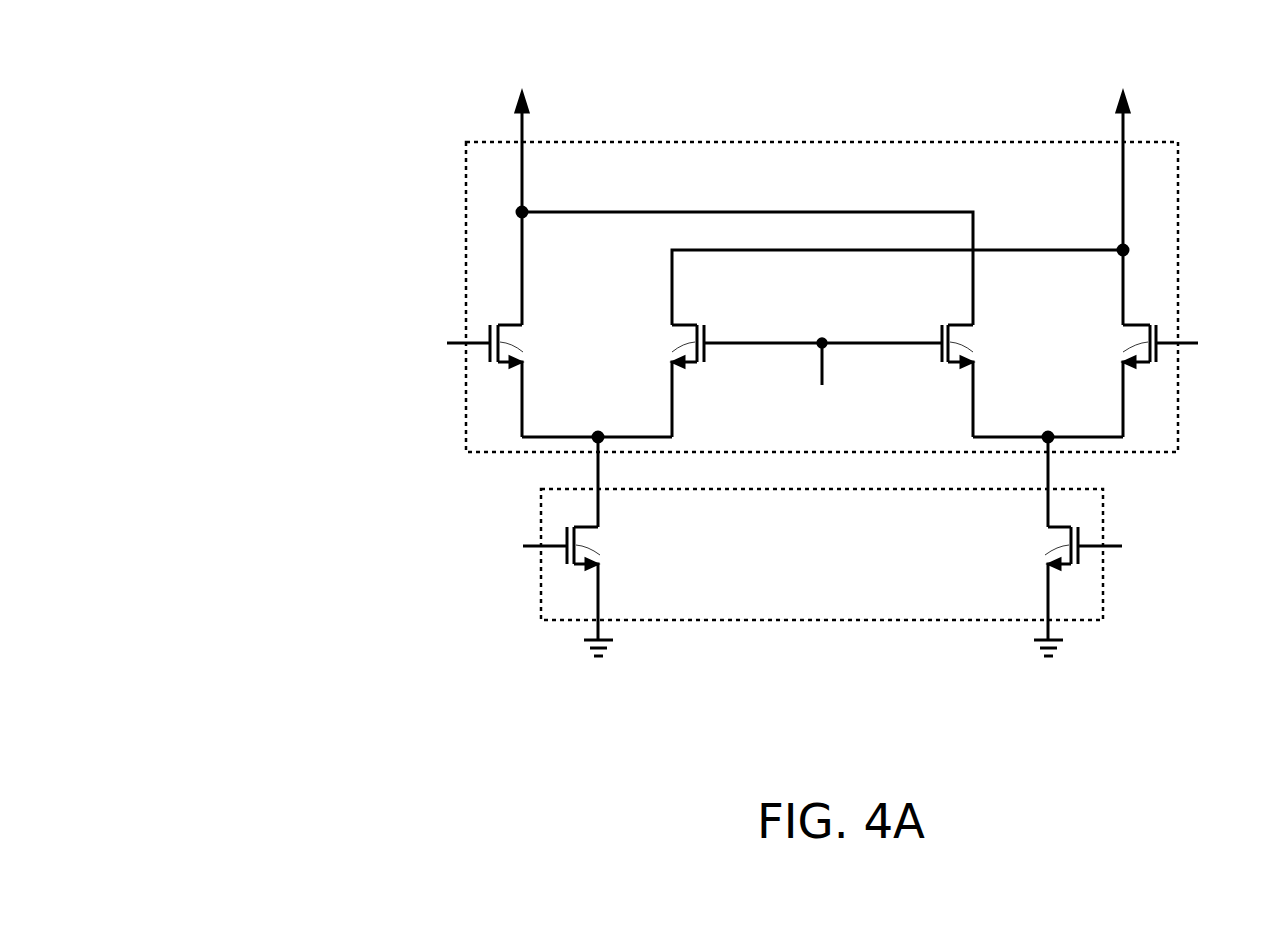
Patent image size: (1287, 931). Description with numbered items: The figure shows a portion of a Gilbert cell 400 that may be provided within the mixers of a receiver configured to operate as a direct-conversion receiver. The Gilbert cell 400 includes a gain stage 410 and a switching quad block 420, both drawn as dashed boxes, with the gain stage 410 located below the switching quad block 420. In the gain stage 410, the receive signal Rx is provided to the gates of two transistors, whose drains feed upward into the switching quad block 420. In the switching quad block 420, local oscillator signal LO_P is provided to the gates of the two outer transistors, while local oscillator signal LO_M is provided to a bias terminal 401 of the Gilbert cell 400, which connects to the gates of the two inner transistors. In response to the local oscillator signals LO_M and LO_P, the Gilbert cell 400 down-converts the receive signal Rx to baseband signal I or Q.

The Gilbert cell 400 is at (281, 84).
The bias terminal 401 is at (822, 338).
The gain stage 410 is at (837, 588).
The switching quad block 420 is at (937, 186).